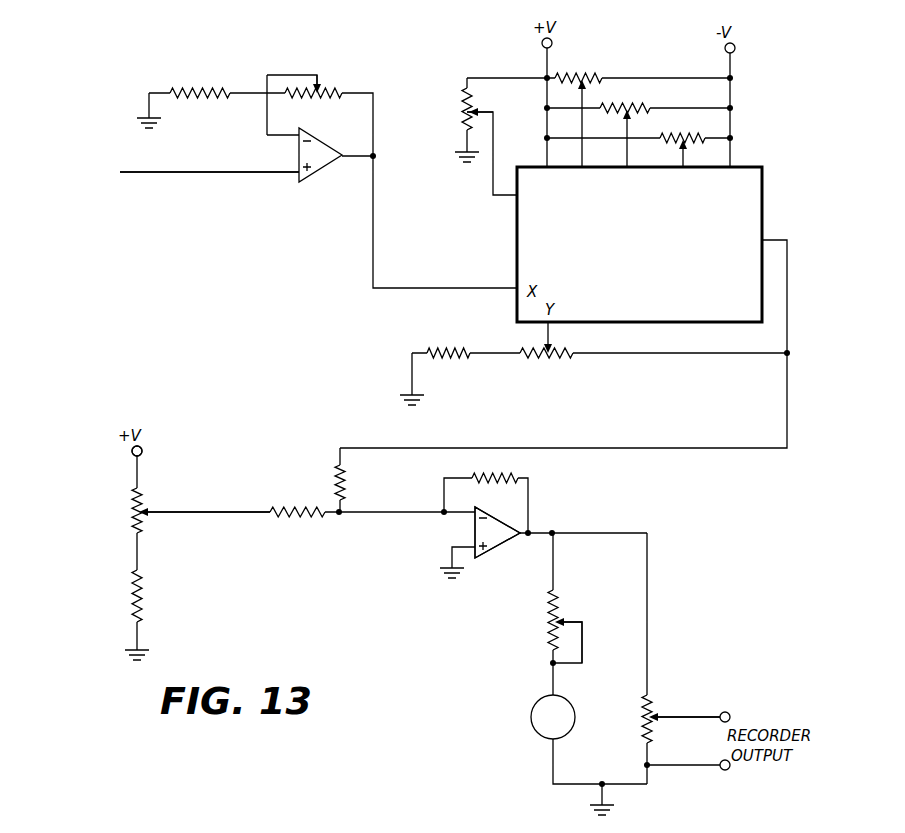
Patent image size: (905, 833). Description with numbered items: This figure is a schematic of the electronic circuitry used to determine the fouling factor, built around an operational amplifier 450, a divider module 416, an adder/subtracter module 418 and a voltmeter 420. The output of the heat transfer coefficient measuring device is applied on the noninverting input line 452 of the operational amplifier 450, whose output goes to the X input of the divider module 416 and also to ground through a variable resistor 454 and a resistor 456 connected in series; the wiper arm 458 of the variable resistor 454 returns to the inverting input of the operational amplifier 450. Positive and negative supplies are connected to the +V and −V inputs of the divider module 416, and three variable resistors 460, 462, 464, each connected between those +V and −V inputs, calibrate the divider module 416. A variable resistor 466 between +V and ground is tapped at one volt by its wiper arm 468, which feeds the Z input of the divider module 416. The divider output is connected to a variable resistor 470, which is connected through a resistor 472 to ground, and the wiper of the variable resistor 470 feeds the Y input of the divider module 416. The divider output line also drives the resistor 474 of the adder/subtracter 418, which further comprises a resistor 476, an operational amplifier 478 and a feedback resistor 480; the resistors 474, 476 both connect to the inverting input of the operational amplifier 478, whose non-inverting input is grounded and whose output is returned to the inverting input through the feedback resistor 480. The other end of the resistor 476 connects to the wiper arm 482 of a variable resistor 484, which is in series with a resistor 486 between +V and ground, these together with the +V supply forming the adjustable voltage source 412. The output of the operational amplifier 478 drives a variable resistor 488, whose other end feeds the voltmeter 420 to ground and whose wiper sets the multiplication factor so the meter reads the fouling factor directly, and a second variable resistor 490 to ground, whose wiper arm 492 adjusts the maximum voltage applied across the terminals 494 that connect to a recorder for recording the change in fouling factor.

The adjustable voltage source 412 is at (118, 480).
The divider module 416 is at (765, 212).
The adder/subtracter module 418 is at (466, 527).
The voltmeter 420 is at (536, 706).
The operational amplifier 450 is at (312, 174).
The noninverting input line 452 is at (160, 172).
The variable resistor 454 is at (328, 92).
The resistor 456 is at (190, 85).
The wiper arm 458 is at (320, 80).
The variable resistor 460 is at (588, 75).
The variable resistor 462 is at (640, 107).
The variable resistor 464 is at (690, 135).
The variable resistor 466 is at (462, 102).
The wiper arm 468 is at (530, 97).
The variable resistor 470 is at (549, 360).
The resistor 472 is at (466, 327).
The resistor 474 is at (336, 465).
The resistor 476 is at (288, 506).
The operational amplifier 478 is at (498, 545).
The feedback resistor 480 is at (520, 478).
The wiper arm 482 is at (172, 510).
The variable resistor 484 is at (130, 506).
The resistor 486 is at (145, 595).
The variable resistor 488 is at (548, 606).
The variable resistor 490 is at (598, 612).
The wiper arm 492 is at (700, 716).
The terminals 494 is at (731, 716).